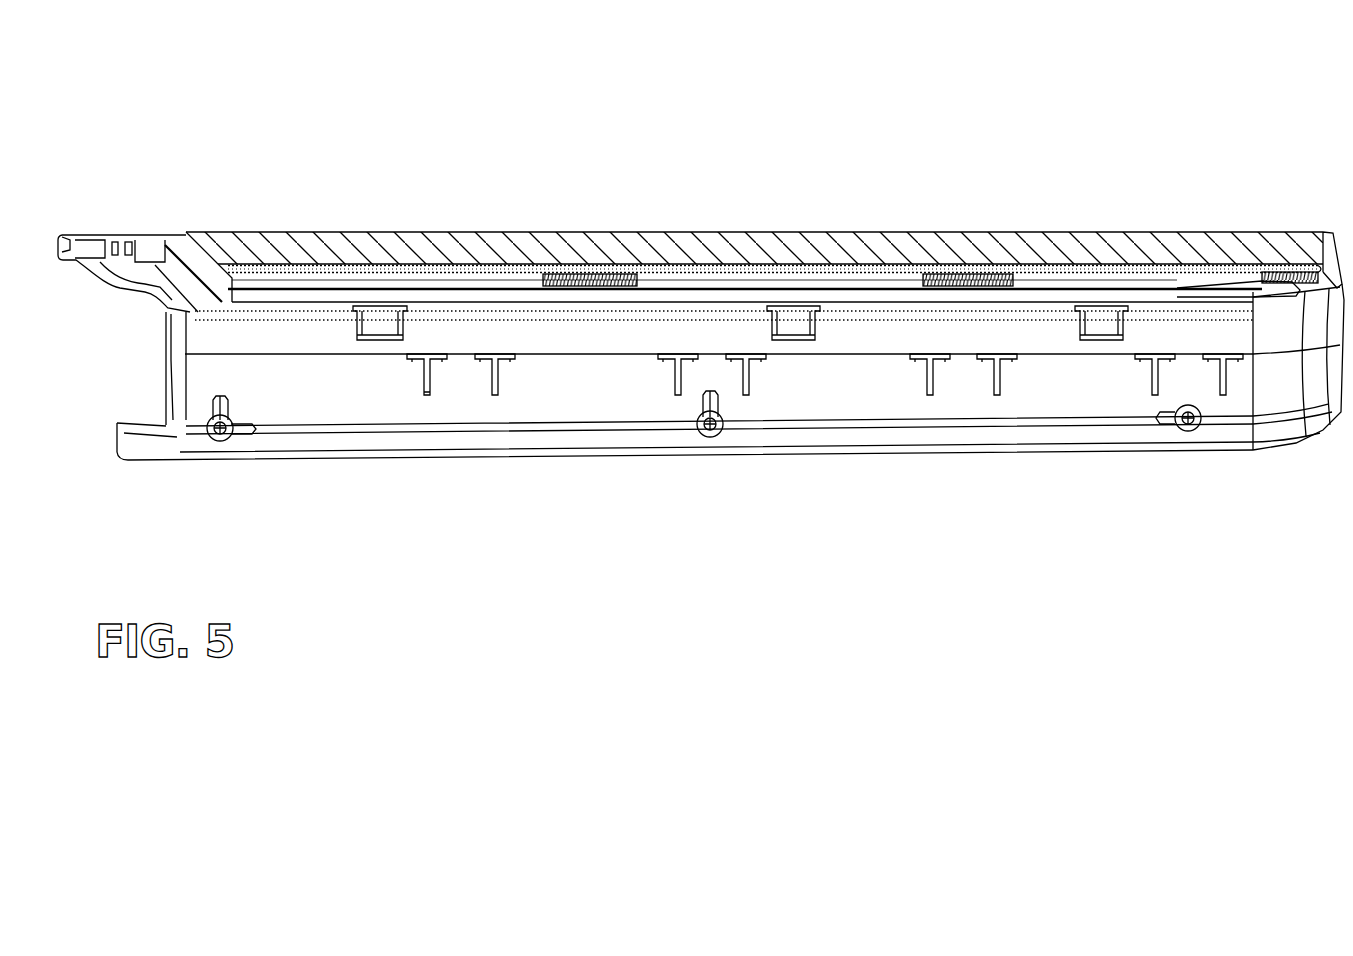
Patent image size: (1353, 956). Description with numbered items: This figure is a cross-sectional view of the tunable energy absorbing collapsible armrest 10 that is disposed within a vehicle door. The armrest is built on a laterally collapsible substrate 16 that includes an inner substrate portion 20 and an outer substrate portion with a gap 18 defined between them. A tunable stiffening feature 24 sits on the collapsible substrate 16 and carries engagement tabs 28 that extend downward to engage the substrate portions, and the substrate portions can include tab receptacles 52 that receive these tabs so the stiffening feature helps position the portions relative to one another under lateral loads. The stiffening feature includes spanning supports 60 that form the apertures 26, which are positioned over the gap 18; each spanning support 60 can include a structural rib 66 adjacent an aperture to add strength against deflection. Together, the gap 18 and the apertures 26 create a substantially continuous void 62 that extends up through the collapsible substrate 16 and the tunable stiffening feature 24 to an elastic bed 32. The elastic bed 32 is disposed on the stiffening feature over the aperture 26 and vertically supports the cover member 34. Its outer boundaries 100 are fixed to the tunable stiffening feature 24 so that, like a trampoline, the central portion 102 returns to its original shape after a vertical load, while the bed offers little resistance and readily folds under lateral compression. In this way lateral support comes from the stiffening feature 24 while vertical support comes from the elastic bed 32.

The tunable energy absorbing collapsible armrest assembly 10 is at (984, 185).
The laterally collapsible substrate 16 is at (244, 469).
The gap 18 is at (526, 304).
The inner substrate portion 20 is at (887, 390).
The tunable stiffening feature 24 is at (245, 292).
The aperture 26 is at (372, 280).
The engagement tab 28 is at (790, 323).
The elastic bed 32 is at (705, 262).
The cover member 34 is at (1045, 245).
The tab receptacle 52 is at (1075, 321).
The spanning support 60 is at (911, 278).
The continuous void 62 is at (380, 374).
The structural rib 66 is at (585, 287).
The outer boundaries 100 is at (222, 240).
The central portion 102 is at (823, 265).